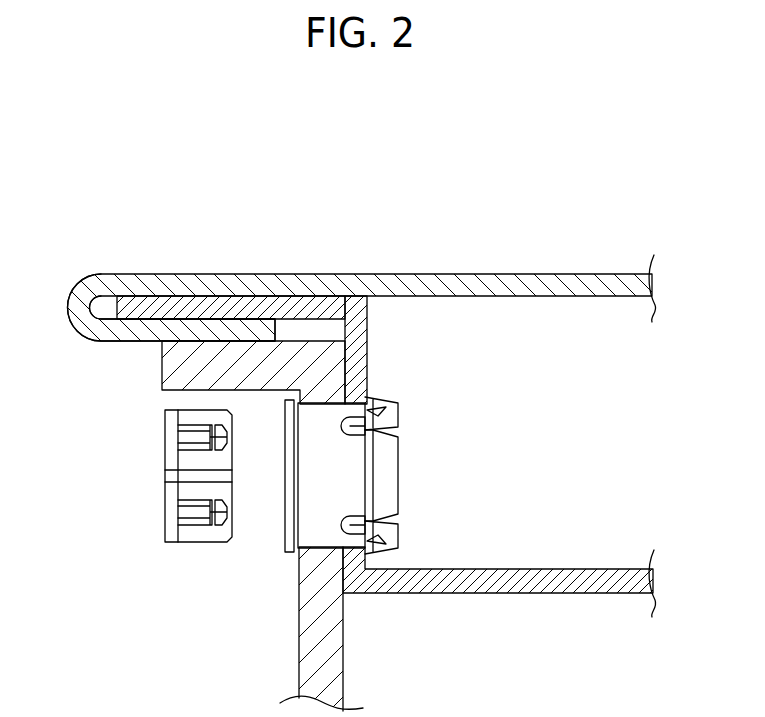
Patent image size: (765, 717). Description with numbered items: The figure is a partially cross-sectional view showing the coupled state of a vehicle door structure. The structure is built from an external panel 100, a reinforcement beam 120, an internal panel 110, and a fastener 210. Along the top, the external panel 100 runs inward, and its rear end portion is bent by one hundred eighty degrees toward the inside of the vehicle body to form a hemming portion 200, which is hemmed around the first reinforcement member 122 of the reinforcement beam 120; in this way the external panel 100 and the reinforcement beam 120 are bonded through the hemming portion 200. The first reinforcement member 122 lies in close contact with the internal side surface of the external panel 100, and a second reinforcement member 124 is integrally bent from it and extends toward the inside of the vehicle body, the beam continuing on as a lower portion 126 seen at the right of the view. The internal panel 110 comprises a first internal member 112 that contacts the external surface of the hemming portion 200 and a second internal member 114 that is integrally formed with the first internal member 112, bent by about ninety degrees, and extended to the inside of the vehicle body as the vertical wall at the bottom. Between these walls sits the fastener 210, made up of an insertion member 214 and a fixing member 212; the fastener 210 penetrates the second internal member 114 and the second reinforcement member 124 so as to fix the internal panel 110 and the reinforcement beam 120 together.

The external panel 100 is at (505, 286).
The hemming portion 200 is at (120, 332).
The internal panel 110 is at (308, 456).
The first internal member 112 is at (223, 362).
The second internal member 114 is at (317, 652).
The reinforcement beam 120 is at (386, 433).
The first reinforcement member 122 is at (322, 310).
The second reinforcement member 124 is at (352, 353).
The lower plate of second frame member 126 is at (567, 585).
The fastener 210 is at (213, 503).
The fixing member 212 is at (190, 481).
The insertion member 214 is at (323, 502).